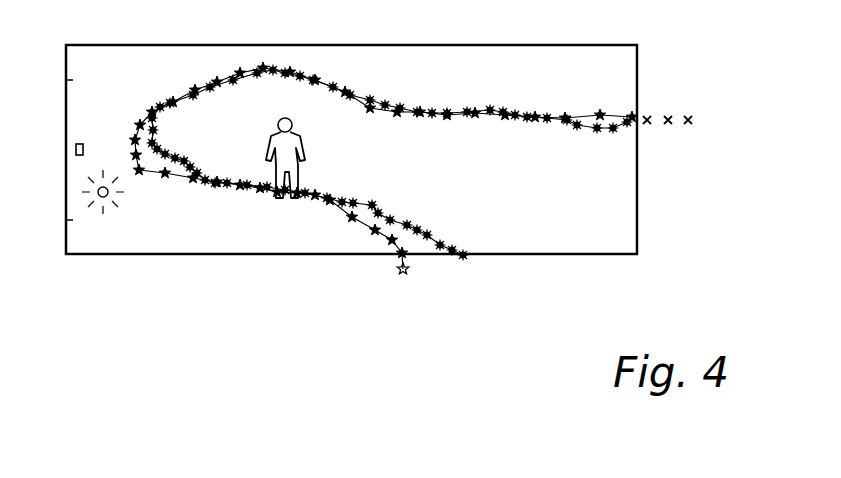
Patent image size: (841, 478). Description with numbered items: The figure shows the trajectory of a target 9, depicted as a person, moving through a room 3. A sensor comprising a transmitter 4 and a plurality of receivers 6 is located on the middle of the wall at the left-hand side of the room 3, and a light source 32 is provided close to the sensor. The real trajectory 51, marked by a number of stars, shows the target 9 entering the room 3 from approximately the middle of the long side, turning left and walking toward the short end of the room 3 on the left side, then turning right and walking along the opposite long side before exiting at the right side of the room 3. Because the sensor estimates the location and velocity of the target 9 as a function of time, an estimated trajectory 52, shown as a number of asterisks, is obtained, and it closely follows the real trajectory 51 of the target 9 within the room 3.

The room 3 is at (533, 254).
The transmitter 4 is at (102, 125).
The receivers 6 is at (80, 142).
The target 9 is at (293, 148).
The light source 32 is at (110, 193).
The trajectory 51 is at (360, 223).
The trajectory 52 is at (345, 195).